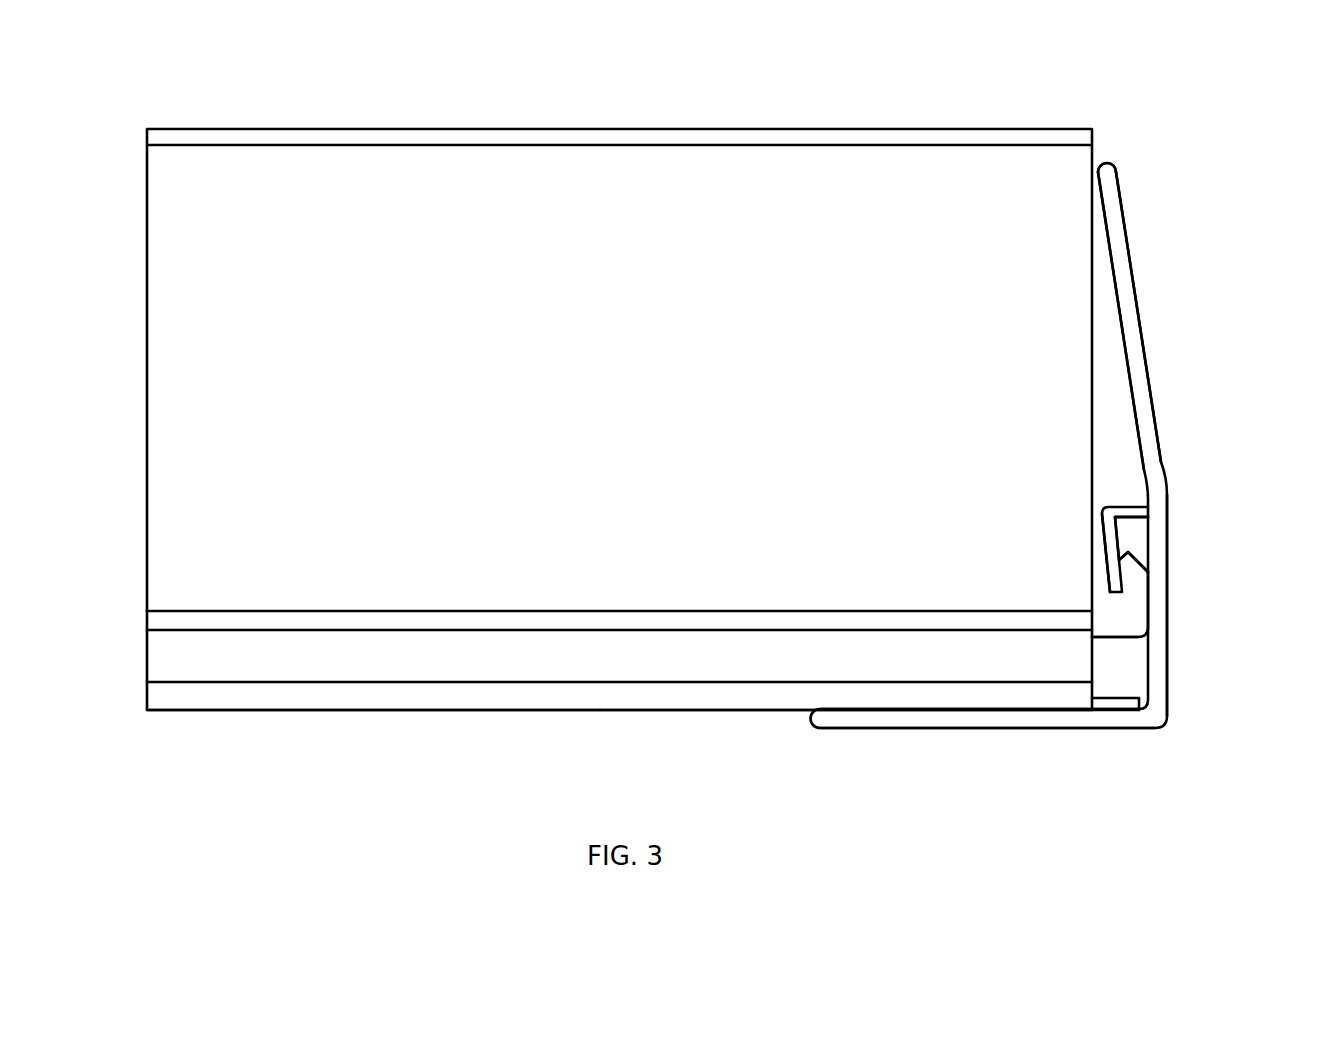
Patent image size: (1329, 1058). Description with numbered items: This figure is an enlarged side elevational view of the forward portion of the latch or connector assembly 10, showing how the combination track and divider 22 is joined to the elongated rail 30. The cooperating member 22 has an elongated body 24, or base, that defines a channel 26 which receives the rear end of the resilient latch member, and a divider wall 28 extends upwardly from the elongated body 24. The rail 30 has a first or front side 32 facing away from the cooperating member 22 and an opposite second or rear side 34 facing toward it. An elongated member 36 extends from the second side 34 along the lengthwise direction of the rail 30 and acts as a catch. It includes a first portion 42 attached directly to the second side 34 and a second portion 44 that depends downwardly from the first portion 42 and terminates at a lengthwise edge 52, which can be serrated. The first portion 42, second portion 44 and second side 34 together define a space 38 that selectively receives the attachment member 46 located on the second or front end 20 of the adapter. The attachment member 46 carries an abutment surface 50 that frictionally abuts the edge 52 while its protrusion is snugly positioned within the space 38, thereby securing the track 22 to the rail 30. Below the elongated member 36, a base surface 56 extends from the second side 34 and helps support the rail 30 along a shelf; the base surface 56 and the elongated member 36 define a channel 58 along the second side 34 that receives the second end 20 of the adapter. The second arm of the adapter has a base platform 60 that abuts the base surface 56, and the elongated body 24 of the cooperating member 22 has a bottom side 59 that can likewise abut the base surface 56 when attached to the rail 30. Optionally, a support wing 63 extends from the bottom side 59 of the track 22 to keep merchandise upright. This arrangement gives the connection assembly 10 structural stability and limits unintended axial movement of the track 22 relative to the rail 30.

The latch or connector assembly 10 is at (1136, 105).
The second or front end 20 is at (1178, 657).
The combination track and divider 22 is at (632, 670).
The elongated body 24 is at (407, 695).
The channel 26 is at (545, 655).
The divider wall 28 is at (385, 213).
The elongated rail 30 is at (1133, 244).
The first or front side 32 is at (1125, 210).
The second or rear side 34 is at (1105, 232).
The elongated member 36 is at (1118, 505).
The space 38 is at (1133, 533).
The first portion 42 is at (1136, 512).
The second portion 44 is at (1107, 543).
The attachment member 46 is at (1117, 641).
The abutment surface 50 is at (1150, 632).
The edge 52 is at (1148, 572).
The base surface 56 is at (918, 730).
The channel 58 is at (1105, 656).
The bottom side 59 is at (741, 712).
The base platform 60 is at (1110, 705).
The support wing 63 is at (278, 712).